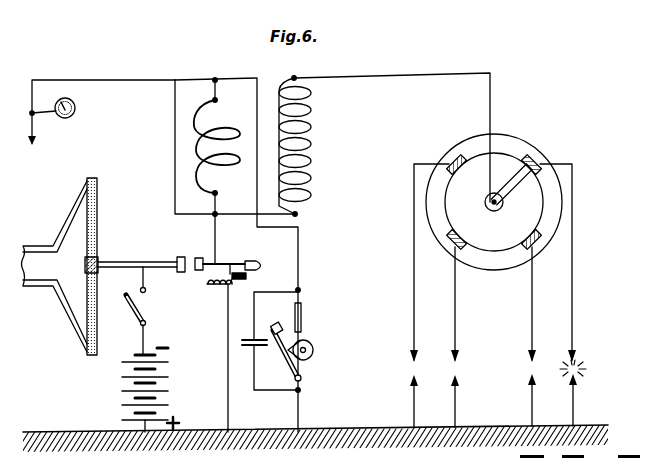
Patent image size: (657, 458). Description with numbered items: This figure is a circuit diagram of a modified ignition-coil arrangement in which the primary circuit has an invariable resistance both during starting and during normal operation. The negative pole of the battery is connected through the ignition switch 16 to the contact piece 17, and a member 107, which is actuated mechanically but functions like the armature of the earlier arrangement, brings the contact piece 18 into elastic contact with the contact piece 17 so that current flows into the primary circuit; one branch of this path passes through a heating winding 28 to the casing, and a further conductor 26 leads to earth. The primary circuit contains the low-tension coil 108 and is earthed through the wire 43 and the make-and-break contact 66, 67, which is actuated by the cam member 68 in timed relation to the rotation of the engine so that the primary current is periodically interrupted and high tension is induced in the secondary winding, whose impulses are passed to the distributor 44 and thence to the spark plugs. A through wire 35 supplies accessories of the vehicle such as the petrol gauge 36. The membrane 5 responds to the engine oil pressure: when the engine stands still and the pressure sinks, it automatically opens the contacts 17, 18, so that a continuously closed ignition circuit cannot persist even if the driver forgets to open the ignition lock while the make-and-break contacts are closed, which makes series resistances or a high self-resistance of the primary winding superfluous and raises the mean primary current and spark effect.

The membrane 5 is at (98, 223).
The ignition switch 16 is at (145, 314).
The contact piece 17 is at (181, 256).
The contact piece 18 is at (199, 257).
The conductor to ground 26 is at (207, 288).
The heating winding 28 is at (212, 282).
The through wire 35 is at (175, 138).
The petrol gauge 36 is at (76, 109).
The wire 43 is at (423, 73).
The distributor 44 is at (525, 141).
The make-and-break contact 66 is at (293, 312).
The make-and-break contact 67 is at (279, 343).
The cam member 68 is at (311, 345).
The member 107 is at (270, 256).
The low-tension coil 108 is at (203, 104).